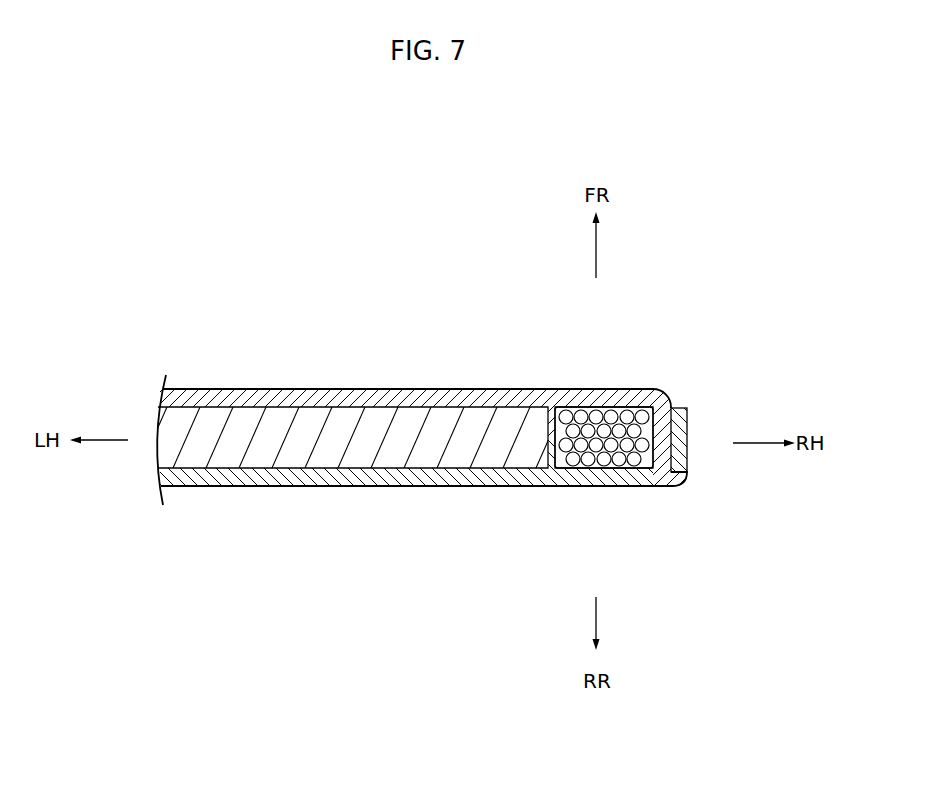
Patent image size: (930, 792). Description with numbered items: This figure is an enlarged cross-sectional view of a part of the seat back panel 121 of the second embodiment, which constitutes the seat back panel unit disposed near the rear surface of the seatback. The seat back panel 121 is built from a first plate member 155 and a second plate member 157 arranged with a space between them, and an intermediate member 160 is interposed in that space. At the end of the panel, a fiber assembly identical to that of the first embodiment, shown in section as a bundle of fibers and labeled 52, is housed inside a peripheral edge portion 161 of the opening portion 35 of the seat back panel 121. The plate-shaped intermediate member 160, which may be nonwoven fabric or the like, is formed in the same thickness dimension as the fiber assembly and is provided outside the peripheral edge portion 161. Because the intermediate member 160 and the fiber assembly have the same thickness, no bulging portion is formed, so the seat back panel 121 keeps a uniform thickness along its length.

The seat back panel 121 is at (459, 328).
The first plate member 155 is at (335, 389).
The second plate member 157 is at (302, 487).
The intermediate member 160 is at (403, 460).
The peripheral edge portion 161 is at (555, 377).
The wire harness (52, 53) 52 is at (596, 450).
The opening portion 35 is at (713, 443).